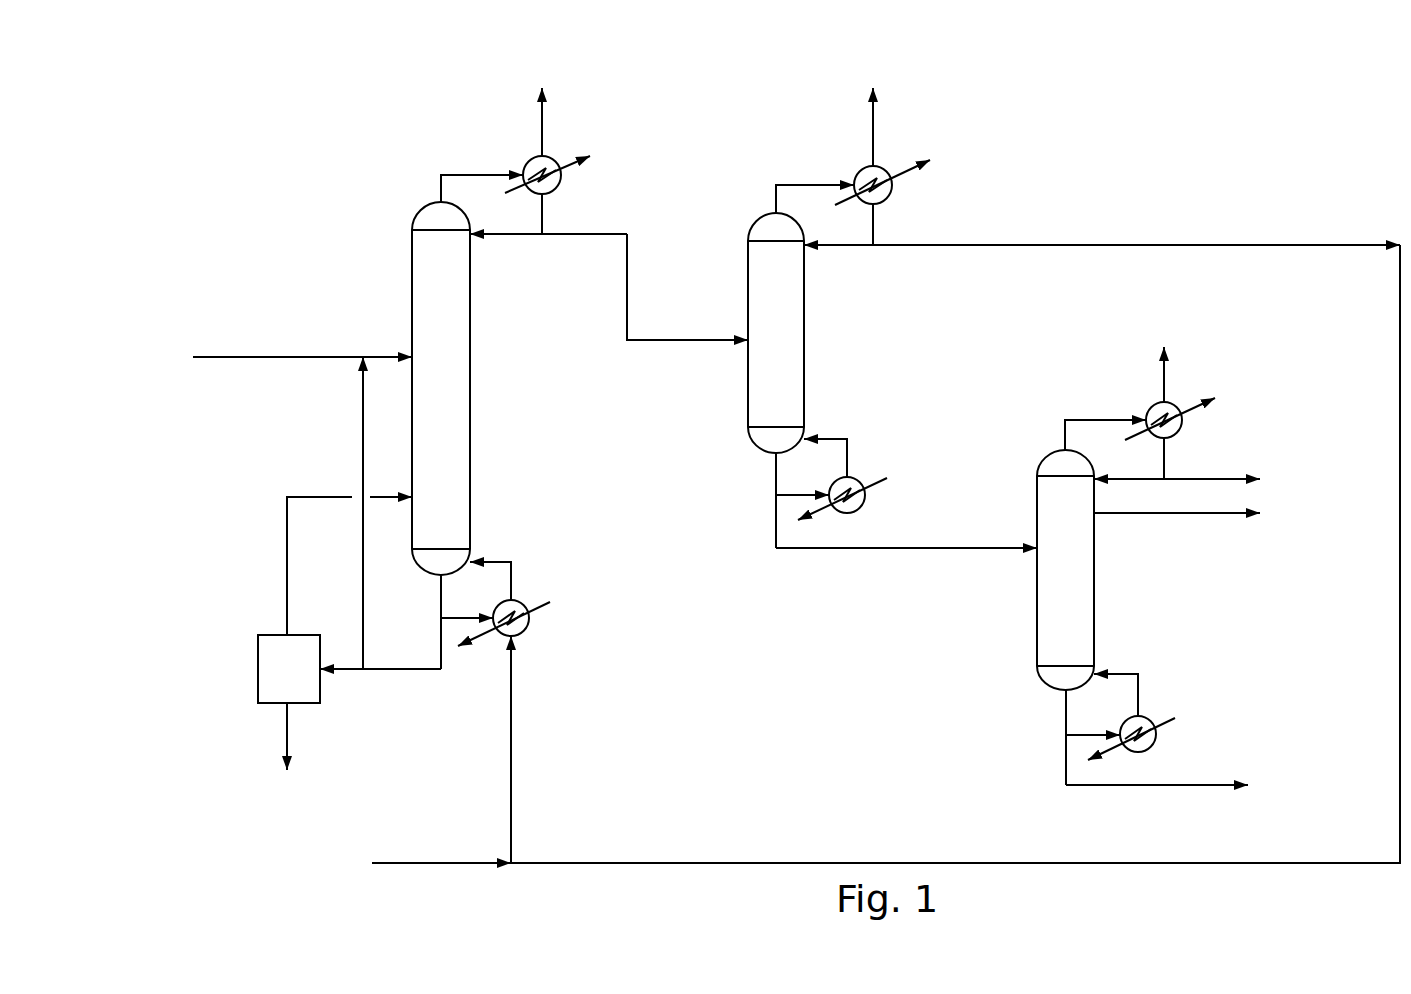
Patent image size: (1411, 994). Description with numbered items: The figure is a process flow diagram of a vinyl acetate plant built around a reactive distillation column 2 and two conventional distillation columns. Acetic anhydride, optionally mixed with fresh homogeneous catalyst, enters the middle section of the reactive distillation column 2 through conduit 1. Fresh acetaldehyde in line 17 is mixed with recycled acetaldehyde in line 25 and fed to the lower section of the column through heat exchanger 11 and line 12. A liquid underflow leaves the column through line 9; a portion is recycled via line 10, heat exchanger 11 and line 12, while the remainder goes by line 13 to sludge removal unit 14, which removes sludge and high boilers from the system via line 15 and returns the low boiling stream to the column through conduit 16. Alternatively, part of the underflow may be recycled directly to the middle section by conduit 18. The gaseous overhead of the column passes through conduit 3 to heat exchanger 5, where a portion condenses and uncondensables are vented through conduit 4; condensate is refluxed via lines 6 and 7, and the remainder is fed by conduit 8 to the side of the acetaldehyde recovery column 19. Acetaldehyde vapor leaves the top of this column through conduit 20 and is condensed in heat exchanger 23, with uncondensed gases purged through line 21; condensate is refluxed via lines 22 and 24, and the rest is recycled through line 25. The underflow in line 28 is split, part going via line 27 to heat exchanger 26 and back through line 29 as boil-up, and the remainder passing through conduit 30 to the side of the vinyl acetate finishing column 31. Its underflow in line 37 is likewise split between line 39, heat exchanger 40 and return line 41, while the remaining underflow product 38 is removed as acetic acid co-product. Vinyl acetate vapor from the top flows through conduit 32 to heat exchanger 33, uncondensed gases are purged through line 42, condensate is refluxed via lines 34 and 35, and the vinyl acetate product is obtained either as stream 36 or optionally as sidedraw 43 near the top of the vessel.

The conduit 1 is at (302, 341).
The reactive distillation column 2 is at (453, 395).
The conduit 3 is at (482, 171).
The conduit 4 is at (554, 122).
The heat exchanger 5 is at (547, 178).
The line 6 is at (531, 214).
The line 7 is at (548, 250).
The conduit 8 is at (660, 287).
The line 9 is at (429, 622).
The line 10 is at (467, 602).
The heat exchanger 11 is at (513, 623).
The line 12 is at (500, 566).
The line 13 is at (380, 686).
The sludge removal unit 14 is at (306, 684).
The line 15 is at (305, 736).
The conduit 16 is at (334, 566).
The line 17 is at (441, 749).
The conduit 18 is at (352, 513).
The acetaldehyde recovery column 19 is at (788, 339).
The conduit 20 is at (815, 184).
The line 21 is at (895, 127).
The line 22 is at (893, 224).
The heat exchanger 23 is at (885, 183).
The line 24 is at (838, 263).
The line 25 is at (955, 554).
The heat exchanger 26 is at (850, 498).
The line 27 is at (802, 476).
The line 28 is at (757, 500).
The line 29 is at (844, 452).
The conduit 30 is at (906, 565).
The vinyl acetate finishing column 31 is at (1076, 593).
The conduit 32 is at (1105, 420).
The heat exchanger 33 is at (1174, 422).
The line 34 is at (1144, 458).
The line 35 is at (1129, 496).
The stream 36 is at (1230, 484).
The line 37 is at (1047, 737).
The underflow product 38 is at (1176, 789).
The line 39 is at (1093, 717).
The heat exchanger 40 is at (1139, 740).
The line 41 is at (1135, 687).
The line 42 is at (1183, 374).
The sidedraw 43 is at (1177, 529).